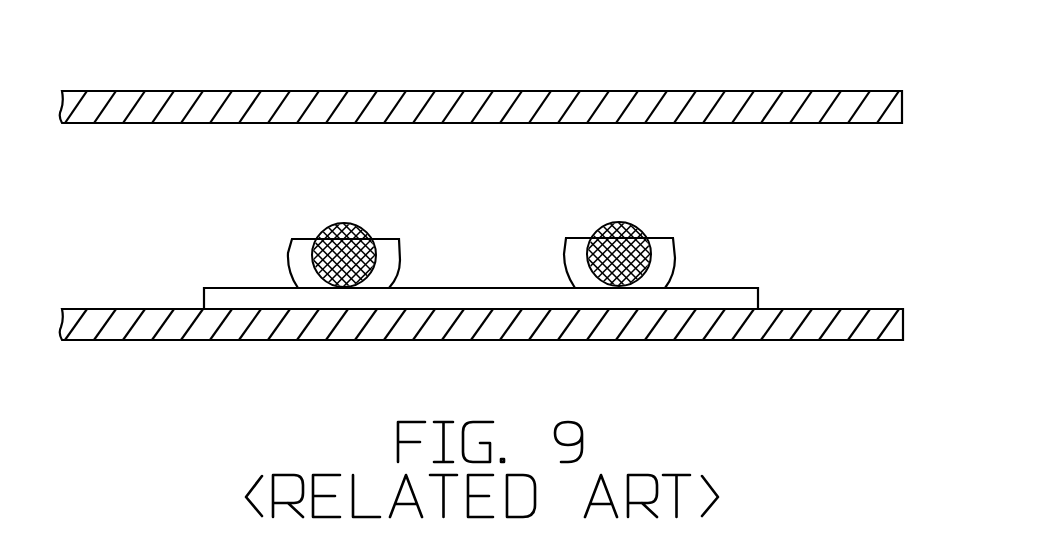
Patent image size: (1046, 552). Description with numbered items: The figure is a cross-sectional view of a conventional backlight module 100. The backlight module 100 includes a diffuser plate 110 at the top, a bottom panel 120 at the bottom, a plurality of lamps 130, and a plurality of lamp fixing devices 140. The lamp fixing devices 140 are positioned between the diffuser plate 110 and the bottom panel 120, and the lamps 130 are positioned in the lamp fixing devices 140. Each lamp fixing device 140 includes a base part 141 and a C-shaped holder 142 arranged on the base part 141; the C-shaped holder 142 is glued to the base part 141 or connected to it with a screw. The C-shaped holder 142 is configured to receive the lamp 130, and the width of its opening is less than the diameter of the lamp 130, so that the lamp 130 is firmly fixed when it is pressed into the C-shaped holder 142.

The backlight module 100 is at (467, 47).
The diffuser plate 110 is at (848, 104).
The bottom panel 120 is at (875, 323).
The lamp 130 is at (630, 233).
The lamp fixing device 140 is at (551, 258).
The base part 141 is at (709, 298).
The C-shaped holder 142 is at (665, 260).